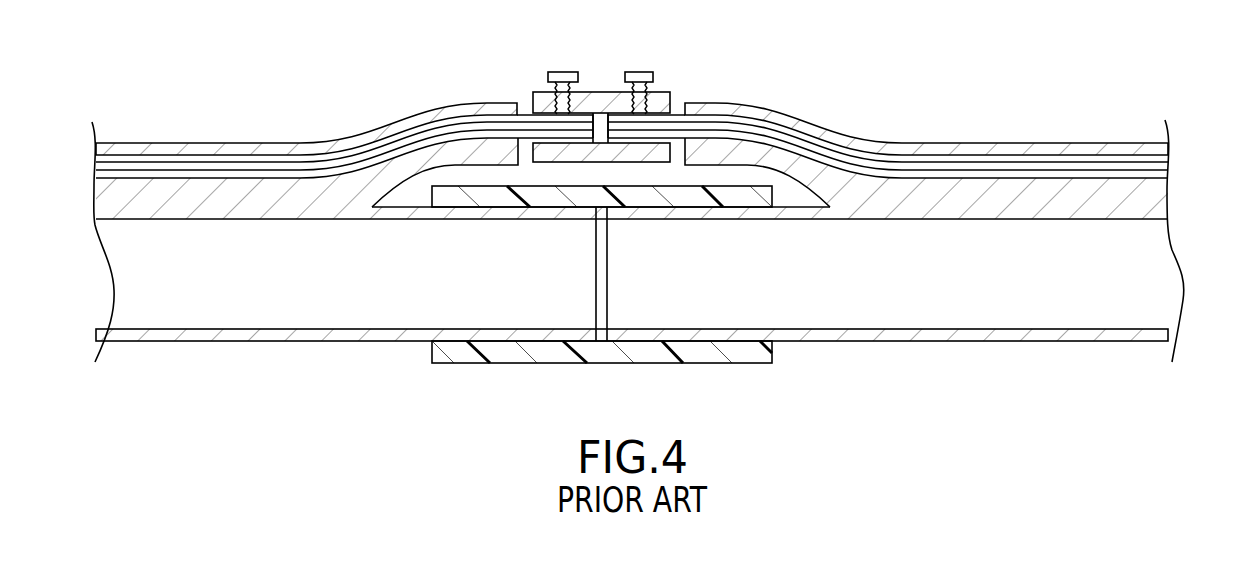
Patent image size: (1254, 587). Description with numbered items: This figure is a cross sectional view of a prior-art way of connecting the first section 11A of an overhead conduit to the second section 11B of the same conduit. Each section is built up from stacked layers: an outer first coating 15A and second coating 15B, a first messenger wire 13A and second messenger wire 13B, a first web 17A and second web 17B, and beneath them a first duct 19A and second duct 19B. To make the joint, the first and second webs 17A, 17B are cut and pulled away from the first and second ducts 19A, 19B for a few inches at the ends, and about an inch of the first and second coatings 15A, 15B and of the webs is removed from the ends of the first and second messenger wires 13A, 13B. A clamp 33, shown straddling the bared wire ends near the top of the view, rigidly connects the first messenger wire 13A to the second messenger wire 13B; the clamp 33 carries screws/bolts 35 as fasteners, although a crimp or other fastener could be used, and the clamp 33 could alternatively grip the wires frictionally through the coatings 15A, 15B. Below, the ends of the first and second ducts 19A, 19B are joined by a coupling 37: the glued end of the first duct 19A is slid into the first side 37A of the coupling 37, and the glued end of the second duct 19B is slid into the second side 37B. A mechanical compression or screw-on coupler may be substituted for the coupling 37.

The first section of overhead conduit 11A is at (925, 192).
The second section of overhead conduit 11B is at (304, 197).
The first messenger wire 13A is at (1165, 168).
The second messenger wire 13B is at (98, 165).
The first coating 15A is at (1128, 144).
The second coating 15B is at (98, 152).
The first web 17A is at (1147, 200).
The second web 17B is at (108, 202).
The first duct 19A is at (1165, 272).
The second duct 19B is at (135, 276).
The clamp 33 is at (673, 81).
The screws/bolts 35 is at (563, 72).
The coupling 37 is at (695, 358).
The first side of coupling 37A is at (773, 350).
The second side of coupling 37B is at (432, 350).